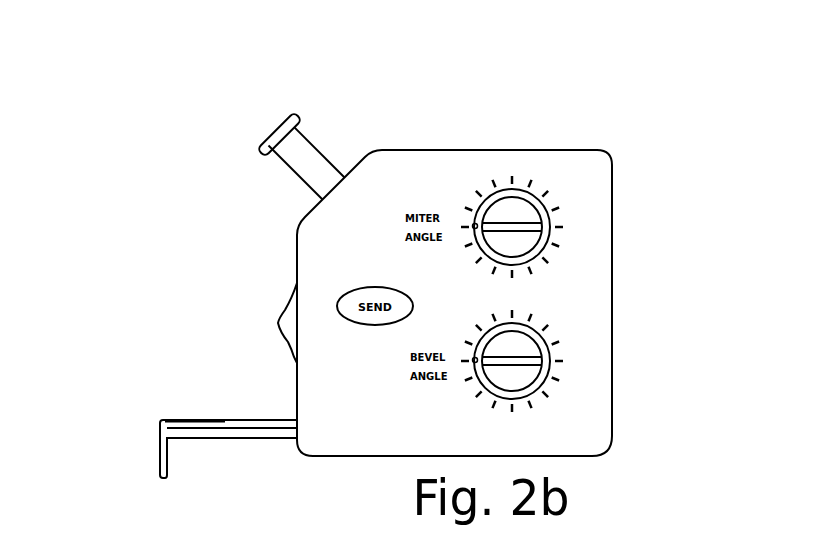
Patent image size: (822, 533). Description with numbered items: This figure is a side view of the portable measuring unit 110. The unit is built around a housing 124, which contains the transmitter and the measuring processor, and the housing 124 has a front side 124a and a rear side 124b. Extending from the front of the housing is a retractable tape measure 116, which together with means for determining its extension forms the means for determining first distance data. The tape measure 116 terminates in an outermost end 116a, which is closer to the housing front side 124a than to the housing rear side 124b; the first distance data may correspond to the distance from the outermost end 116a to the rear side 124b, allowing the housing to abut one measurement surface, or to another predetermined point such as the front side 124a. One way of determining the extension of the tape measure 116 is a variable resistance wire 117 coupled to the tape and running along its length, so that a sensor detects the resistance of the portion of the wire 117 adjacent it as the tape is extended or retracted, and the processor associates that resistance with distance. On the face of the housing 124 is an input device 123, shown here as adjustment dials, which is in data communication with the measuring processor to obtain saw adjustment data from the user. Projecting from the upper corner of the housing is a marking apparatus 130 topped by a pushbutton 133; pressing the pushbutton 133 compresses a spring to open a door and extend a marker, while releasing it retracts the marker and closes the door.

The portable measuring unit 110 is at (713, 148).
The retractable tape measure 116 is at (197, 418).
The outermost end 116a is at (158, 448).
The variable resistance wire 117 is at (215, 438).
The input device 123 is at (567, 262).
The housing 124 is at (613, 150).
The housing front side 124a is at (299, 272).
The housing rear side 124b is at (611, 426).
The marking apparatus 130 is at (363, 113).
The pushbutton 133 is at (268, 132).